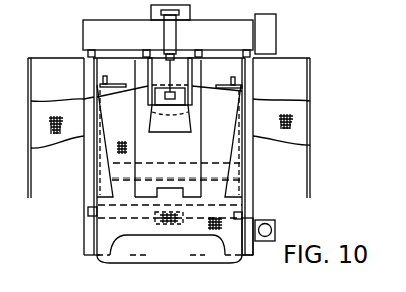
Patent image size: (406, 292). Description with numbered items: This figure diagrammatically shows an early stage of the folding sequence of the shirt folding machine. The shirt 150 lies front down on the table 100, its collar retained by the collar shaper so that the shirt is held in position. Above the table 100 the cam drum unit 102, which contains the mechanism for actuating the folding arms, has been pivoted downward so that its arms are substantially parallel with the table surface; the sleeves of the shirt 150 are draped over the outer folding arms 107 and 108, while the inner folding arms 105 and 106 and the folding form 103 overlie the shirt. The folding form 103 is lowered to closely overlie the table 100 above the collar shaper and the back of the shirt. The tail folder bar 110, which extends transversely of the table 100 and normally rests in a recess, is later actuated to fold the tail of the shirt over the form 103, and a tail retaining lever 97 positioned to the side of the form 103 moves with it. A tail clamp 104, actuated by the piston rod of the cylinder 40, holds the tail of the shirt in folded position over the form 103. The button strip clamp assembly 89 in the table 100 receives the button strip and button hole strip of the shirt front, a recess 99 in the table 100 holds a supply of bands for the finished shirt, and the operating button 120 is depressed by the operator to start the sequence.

The cylinder 40 is at (178, 35).
The cam drum unit 102 is at (276, 28).
The outer folding arm 107 is at (33, 80).
The tail retaining lever 97 is at (117, 83).
The shirt 150 is at (310, 116).
The tail clamp 104 is at (155, 130).
The folding form 103 is at (200, 141).
The inner folding arm 106 is at (97, 172).
The inner folding arm 105 is at (243, 183).
The table 100 is at (248, 154).
The recess 99 is at (245, 178).
The outer folding arm 108 is at (308, 152).
The tail folder bar 110 is at (240, 212).
The operating button 120 is at (276, 230).
The button strip clamp assembly 89 is at (157, 232).